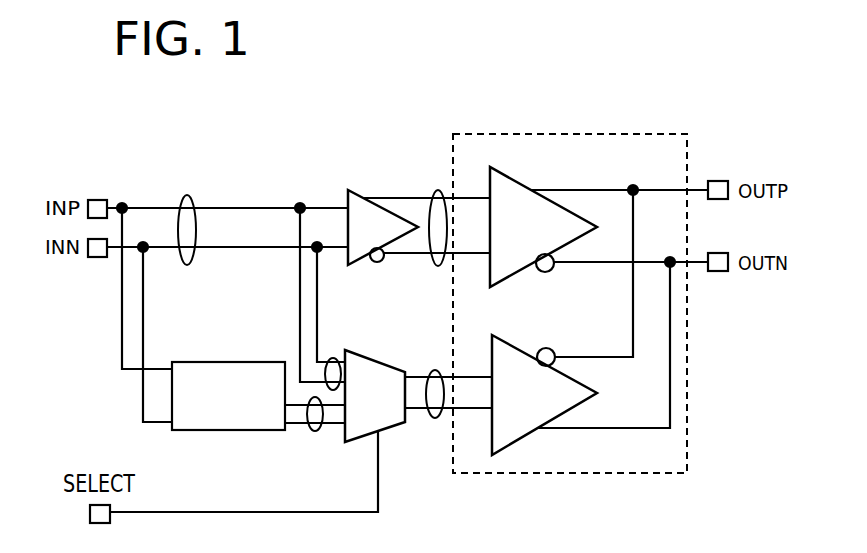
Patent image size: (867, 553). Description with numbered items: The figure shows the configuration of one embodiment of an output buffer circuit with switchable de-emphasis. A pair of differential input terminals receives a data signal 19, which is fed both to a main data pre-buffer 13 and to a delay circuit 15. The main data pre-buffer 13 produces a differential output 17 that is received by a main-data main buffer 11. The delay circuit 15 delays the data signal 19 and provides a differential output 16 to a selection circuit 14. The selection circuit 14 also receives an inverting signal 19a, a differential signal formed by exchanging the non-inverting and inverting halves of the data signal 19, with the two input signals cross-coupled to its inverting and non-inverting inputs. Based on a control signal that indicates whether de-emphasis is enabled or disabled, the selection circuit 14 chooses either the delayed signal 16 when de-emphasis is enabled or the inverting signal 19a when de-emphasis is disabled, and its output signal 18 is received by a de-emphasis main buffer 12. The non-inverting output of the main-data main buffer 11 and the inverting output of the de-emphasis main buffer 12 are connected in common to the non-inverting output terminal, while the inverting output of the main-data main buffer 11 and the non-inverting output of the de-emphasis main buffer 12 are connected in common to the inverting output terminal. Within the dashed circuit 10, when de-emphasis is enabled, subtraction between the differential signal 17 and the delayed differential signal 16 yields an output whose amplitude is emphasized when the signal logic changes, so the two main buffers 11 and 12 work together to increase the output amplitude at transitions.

The circuit 10 is at (688, 142).
The main-data main buffer 11 is at (527, 175).
The de-emphasis main buffer 12 is at (522, 347).
The main data pre-buffer 13 is at (358, 192).
The selection circuit 14 is at (375, 358).
The delay circuit 15 is at (215, 362).
The differential output of the delay circuit 16 is at (315, 432).
The differential output of the main data pre-buffer 17 is at (438, 190).
The output signal of the selection circuit 18 is at (435, 418).
The data signal 19 is at (187, 195).
The inverting signal 19a is at (333, 358).